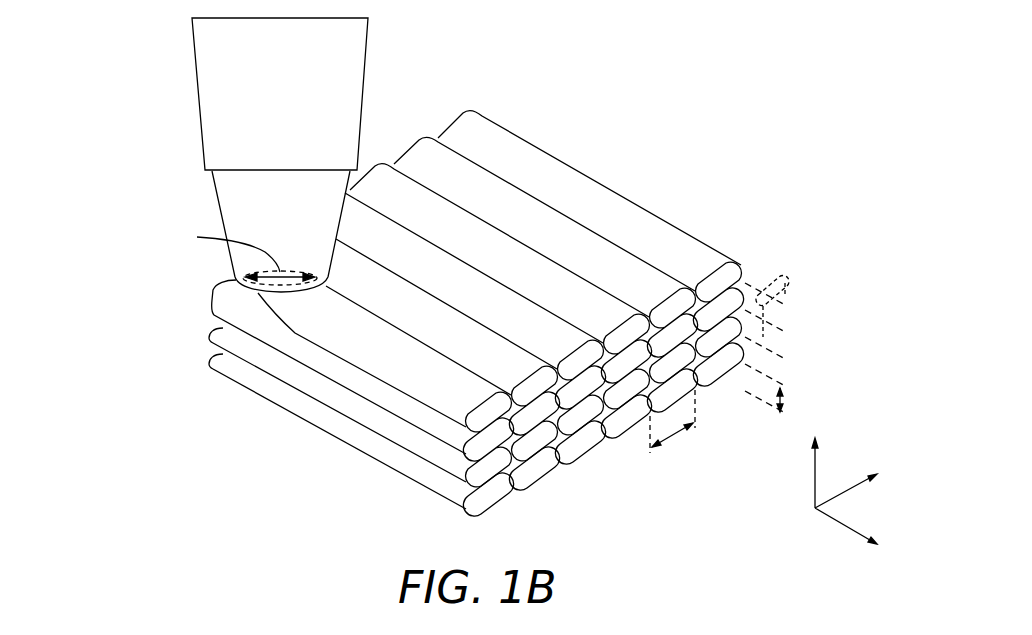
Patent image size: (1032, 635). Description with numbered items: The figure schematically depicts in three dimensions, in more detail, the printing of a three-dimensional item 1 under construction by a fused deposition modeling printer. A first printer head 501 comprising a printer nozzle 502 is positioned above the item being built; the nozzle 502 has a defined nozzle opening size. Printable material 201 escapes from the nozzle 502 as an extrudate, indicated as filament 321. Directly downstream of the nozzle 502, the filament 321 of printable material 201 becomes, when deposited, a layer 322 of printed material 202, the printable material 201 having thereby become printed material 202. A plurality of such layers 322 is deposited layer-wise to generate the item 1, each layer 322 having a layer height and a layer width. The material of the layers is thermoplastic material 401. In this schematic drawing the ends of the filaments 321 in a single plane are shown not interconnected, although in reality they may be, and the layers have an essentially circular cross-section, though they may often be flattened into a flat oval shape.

The 3D item 1 is at (698, 178).
The 3D printable material 201 is at (384, 253).
The filament 321 is at (347, 310).
The layer 322 is at (218, 327).
The 3D printed material 202 is at (363, 352).
The thermoplastic material 401 is at (448, 437).
The first printer head 501 is at (197, 107).
The printer nozzle 502 is at (223, 288).